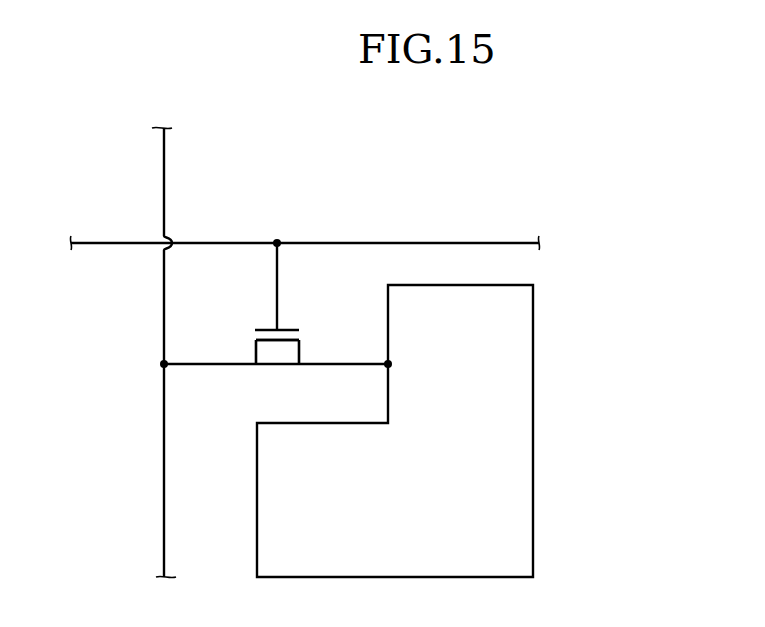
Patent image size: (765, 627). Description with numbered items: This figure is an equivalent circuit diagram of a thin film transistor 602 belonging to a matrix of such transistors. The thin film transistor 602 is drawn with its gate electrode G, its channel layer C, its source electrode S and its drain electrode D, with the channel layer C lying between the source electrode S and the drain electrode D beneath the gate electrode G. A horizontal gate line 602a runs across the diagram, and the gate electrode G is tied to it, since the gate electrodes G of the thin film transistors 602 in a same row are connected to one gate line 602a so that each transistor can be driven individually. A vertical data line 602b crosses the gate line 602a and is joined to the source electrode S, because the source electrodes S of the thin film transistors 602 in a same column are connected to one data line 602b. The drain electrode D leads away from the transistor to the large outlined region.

The gate line 602a is at (122, 243).
The data line 602b is at (164, 173).
The thin film transistor 602 is at (307, 324).
The gate electrode G is at (277, 243).
The channel layer C is at (256, 337).
The source electrode S is at (164, 364).
The drain electrode D is at (388, 364).